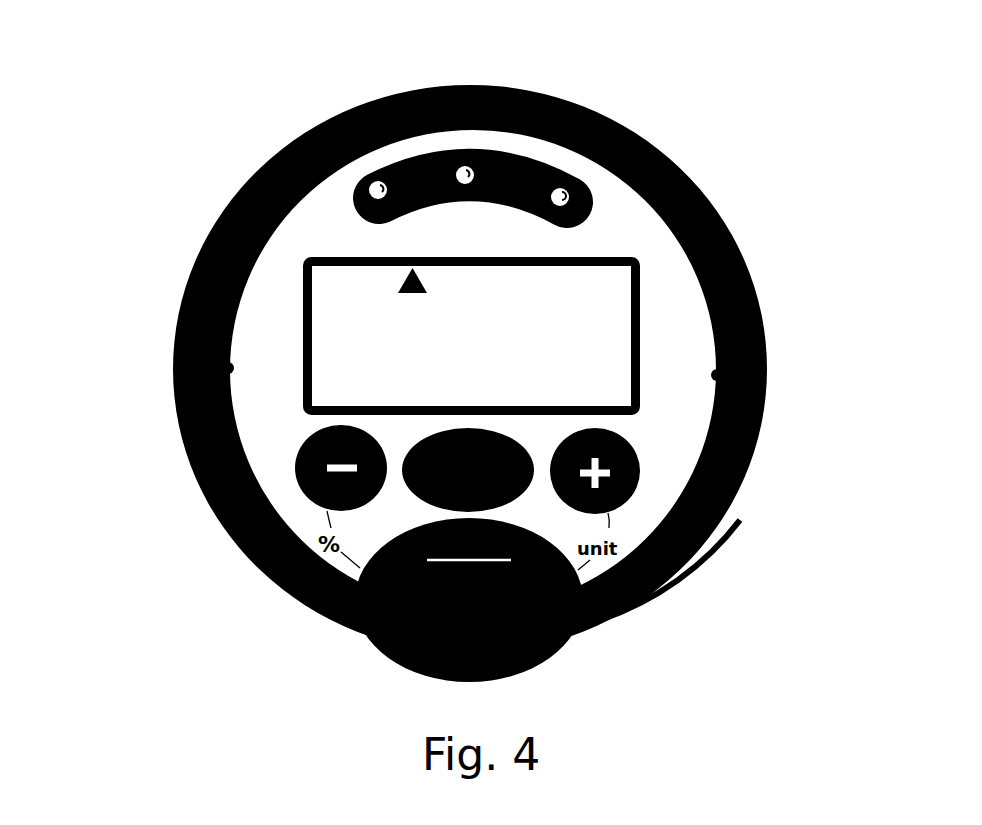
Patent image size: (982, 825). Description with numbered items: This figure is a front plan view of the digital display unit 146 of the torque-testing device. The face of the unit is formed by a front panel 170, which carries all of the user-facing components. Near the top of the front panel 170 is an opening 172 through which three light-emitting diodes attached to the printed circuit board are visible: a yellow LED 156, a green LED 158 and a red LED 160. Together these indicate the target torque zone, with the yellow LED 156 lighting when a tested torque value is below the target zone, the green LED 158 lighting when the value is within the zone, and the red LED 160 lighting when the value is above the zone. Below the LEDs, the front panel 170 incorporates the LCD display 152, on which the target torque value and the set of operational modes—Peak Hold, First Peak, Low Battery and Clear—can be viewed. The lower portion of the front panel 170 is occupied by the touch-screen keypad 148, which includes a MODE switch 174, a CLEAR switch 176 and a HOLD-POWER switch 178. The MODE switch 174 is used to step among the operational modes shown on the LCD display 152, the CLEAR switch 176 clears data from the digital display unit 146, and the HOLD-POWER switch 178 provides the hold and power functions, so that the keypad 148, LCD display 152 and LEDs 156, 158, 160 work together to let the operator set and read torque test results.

The digital display unit 146 is at (238, 184).
The touch-screen keypad 148 is at (660, 466).
The LCD display 152 is at (640, 301).
The yellow LED 156 is at (390, 165).
The green LED 158 is at (468, 152).
The red LED 160 is at (568, 182).
The front panel 170 is at (277, 292).
The opening 172 is at (593, 189).
The MODE switch 174 is at (413, 497).
The CLEAR switch 176 is at (388, 536).
The HOLD-POWER switch 178 is at (663, 595).